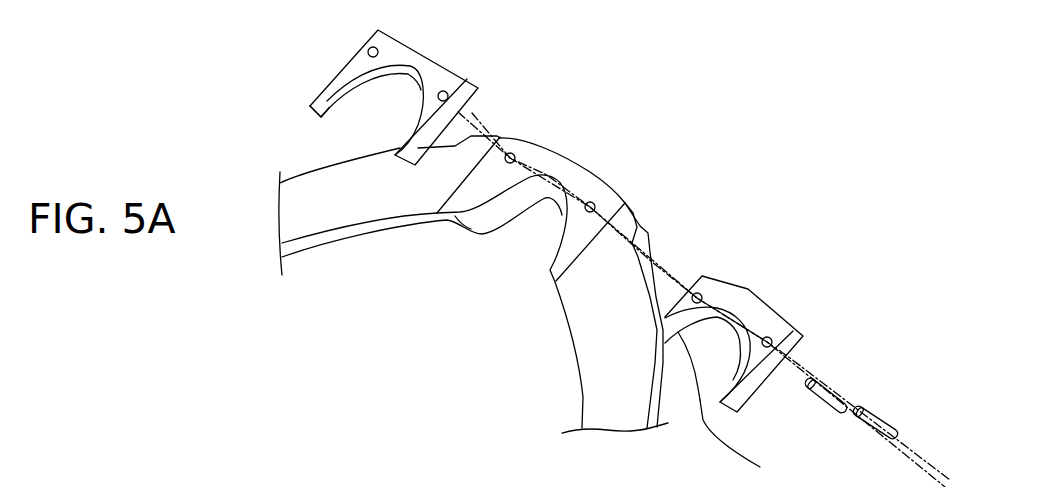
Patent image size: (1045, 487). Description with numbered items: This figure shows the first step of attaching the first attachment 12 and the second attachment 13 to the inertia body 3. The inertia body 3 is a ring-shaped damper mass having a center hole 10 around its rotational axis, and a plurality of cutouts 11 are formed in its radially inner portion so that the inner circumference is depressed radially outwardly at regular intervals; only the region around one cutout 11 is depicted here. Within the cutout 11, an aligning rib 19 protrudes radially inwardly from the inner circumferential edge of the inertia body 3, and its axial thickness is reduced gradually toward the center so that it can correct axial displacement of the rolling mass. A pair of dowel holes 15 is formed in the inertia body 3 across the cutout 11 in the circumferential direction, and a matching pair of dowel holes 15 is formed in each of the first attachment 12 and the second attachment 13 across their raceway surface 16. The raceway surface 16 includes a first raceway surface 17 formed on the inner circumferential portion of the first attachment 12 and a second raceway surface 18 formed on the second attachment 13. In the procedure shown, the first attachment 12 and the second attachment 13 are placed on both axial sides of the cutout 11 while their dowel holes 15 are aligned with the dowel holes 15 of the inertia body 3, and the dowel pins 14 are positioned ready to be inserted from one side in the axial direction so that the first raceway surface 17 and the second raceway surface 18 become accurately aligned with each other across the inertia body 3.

The inertia body 3 is at (630, 420).
The center hole 10 is at (570, 323).
The cutout 11 is at (514, 242).
The first attachment 12 is at (445, 57).
The second attachment 13 is at (745, 290).
The dowel pin 14 is at (833, 388).
The dowel hole 15 is at (368, 49).
The raceway surface 16 is at (528, 295).
The first raceway surface 17 is at (322, 119).
The second raceway surface 18 is at (760, 467).
The aligning rib 19 is at (552, 187).